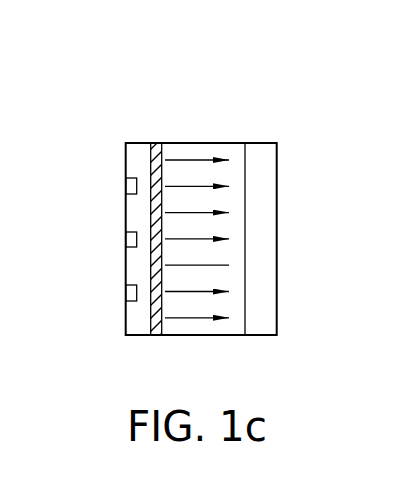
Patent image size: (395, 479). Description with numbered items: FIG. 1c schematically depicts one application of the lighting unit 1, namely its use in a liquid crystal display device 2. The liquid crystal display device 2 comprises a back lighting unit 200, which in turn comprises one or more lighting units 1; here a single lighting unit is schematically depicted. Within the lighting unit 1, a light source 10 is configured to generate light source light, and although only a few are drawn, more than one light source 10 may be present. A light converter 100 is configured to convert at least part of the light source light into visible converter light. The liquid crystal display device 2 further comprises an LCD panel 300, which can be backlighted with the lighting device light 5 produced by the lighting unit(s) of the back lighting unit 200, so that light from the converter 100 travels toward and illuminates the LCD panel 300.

The lighting device 1 is at (138, 341).
The liquid crystal display device 2 is at (315, 177).
The lighting device light 5 is at (197, 318).
The light source 10 is at (131, 184).
The light converter 100 is at (160, 325).
The back lighting unit 200 is at (160, 136).
The LCD panel 300 is at (263, 135).